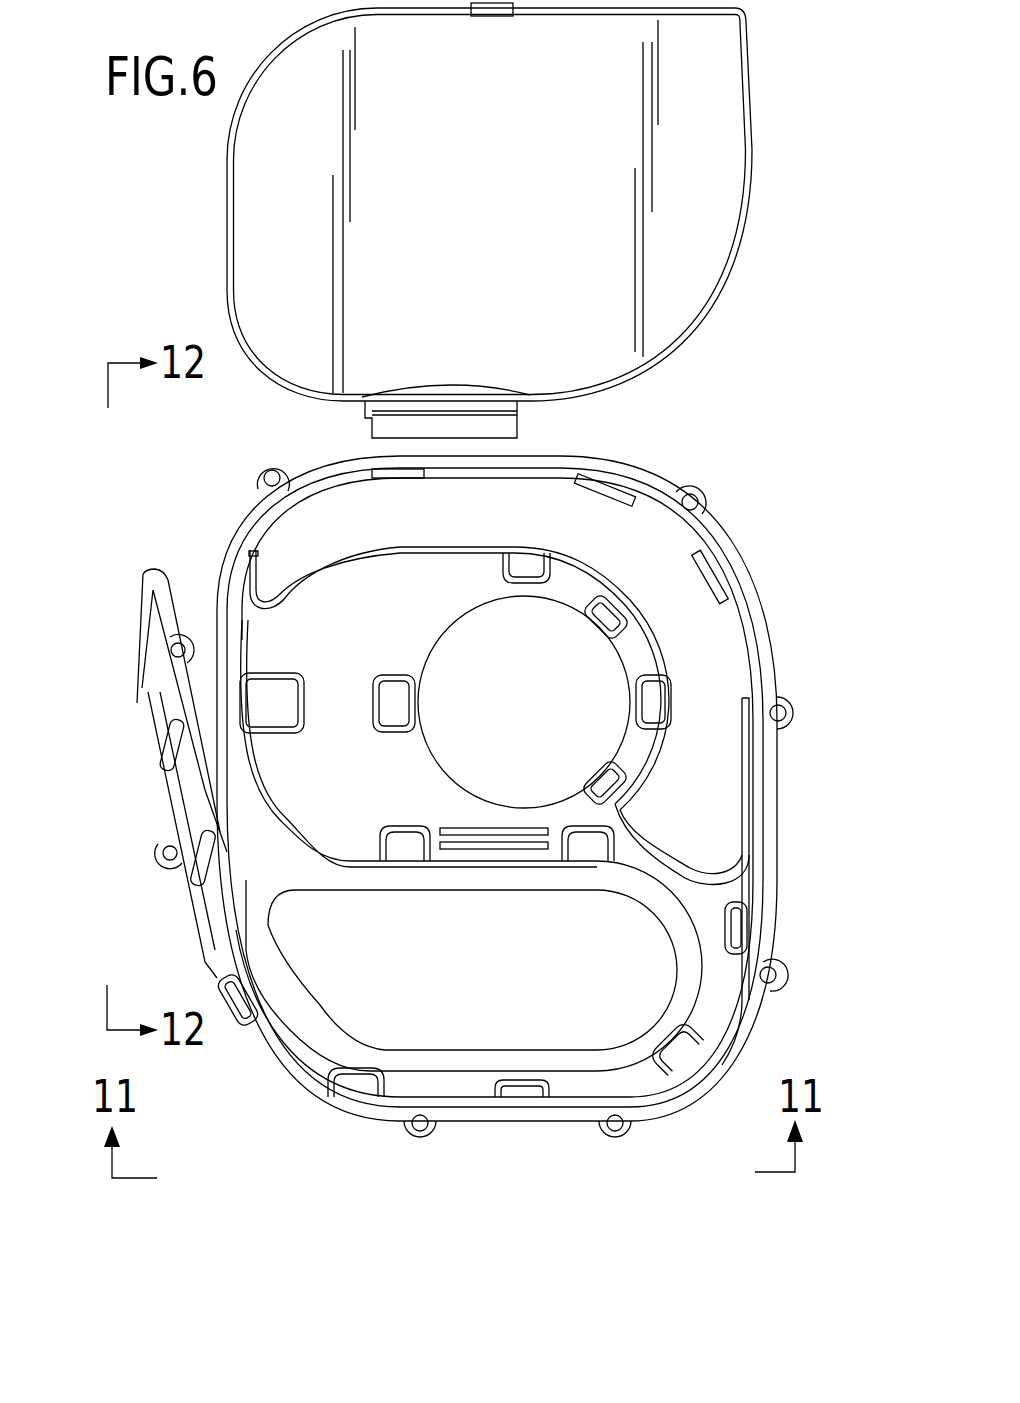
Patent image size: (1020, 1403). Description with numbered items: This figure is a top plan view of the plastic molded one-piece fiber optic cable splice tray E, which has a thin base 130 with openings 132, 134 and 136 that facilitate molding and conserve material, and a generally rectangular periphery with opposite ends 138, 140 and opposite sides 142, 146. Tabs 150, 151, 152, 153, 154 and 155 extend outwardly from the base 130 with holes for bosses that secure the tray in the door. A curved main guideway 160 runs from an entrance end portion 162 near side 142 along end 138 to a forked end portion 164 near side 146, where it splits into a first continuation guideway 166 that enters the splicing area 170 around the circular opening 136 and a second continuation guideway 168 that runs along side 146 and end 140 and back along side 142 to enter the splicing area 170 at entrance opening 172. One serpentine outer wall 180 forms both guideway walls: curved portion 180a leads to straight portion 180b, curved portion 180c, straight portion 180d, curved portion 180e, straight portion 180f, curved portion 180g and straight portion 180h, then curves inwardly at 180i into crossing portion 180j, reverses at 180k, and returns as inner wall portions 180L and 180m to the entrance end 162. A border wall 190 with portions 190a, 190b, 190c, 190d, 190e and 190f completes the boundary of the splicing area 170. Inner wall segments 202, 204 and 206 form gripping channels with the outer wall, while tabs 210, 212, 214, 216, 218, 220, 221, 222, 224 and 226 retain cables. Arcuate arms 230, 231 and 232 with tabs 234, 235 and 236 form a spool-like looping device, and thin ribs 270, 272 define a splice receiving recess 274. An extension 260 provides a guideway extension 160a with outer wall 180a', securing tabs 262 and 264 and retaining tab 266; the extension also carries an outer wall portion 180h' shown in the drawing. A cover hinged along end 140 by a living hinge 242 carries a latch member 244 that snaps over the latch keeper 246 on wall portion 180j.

The latch member 244 is at (497, 17).
The living hinge 242 is at (364, 411).
The tray end 140 is at (548, 455).
The main guideway outer wall 180 is at (254, 1078).
The main guideway 160 is at (309, 1082).
The splicing area 170 is at (344, 770).
The border wall 190 is at (372, 538).
The arcuate arm 230 is at (420, 705).
The tab 210 is at (250, 1003).
The tab 155 is at (270, 466).
The tab 154 is at (689, 486).
The tab 153 is at (792, 706).
The tab 152 is at (782, 980).
The tab 151 is at (616, 1139).
The tab 150 is at (420, 1140).
The splice tray E is at (718, 500).
The curved outer wall portion 180a is at (211, 1076).
The extension outer wall 180a' is at (117, 848).
The straight outer wall portion 180b is at (468, 1104).
The curved outer wall portion 180c is at (744, 1024).
The straight outer wall portion 180d is at (757, 847).
The curved outer wall portion 180e is at (718, 565).
The straight outer wall portion 180f is at (530, 456).
The curved outer wall portion 180g is at (295, 464).
The straight outer wall portion 180h is at (131, 555).
The wall portion 180h' is at (117, 611).
The inwardly curved wall portion 180i is at (276, 808).
The crossing wall portion 180j is at (438, 856).
The reversely curved wall portion 180k is at (690, 948).
The straight inner wall portion 180L is at (460, 1071).
The curved inner wall portion 180m is at (355, 1060).
The border wall portion 190a is at (742, 762).
The border wall portion 190b is at (692, 853).
The curved border wall portion 190c is at (664, 652).
The straight border wall portion 190d is at (458, 547).
The reversely curved border wall portion 190e is at (268, 600).
The terminal border wall portion 190f is at (254, 556).
The first continuation guideway 166 is at (647, 852).
The entrance opening 172 is at (248, 604).
The opening 134 is at (734, 654).
The circular opening 136 is at (425, 745).
The tray side 146 is at (778, 778).
The second continuation guideway 168 is at (750, 822).
The forked end portion 164 is at (750, 890).
The tray side 142 is at (236, 632).
The securing tab 264 is at (221, 573).
The main guideway extension 160a is at (158, 665).
The extension 260 is at (128, 694).
The securing tab 262 is at (156, 867).
The cable retaining tab 266 is at (168, 744).
The entrance end portion 162 is at (208, 900).
The tab 226 is at (292, 682).
The tab 234 is at (392, 673).
The tab 222 is at (656, 693).
The tab 224 is at (503, 566).
The arcuate arm 231 is at (596, 618).
The tab 235 is at (606, 628).
The arcuate arm 232 is at (598, 768).
The tab 236 is at (592, 786).
The tab 220 is at (405, 828).
The tab 221 is at (594, 861).
The thin rib 272 is at (465, 828).
The splice receiving recess 274 is at (487, 842).
The latch keeper 246 is at (465, 852).
The thin rib 270 is at (492, 852).
The inner guideway wall segment 202 is at (400, 479).
The inner guideway wall segment 204 is at (618, 497).
The inner guideway wall segment 206 is at (700, 578).
The tab 214 is at (745, 927).
The tab 212 is at (548, 1072).
The tab 216 is at (356, 1082).
The tab 218 is at (682, 1056).
The opening 132 is at (620, 1066).
The tray base 130 is at (567, 1114).
The tray end 138 is at (517, 1110).